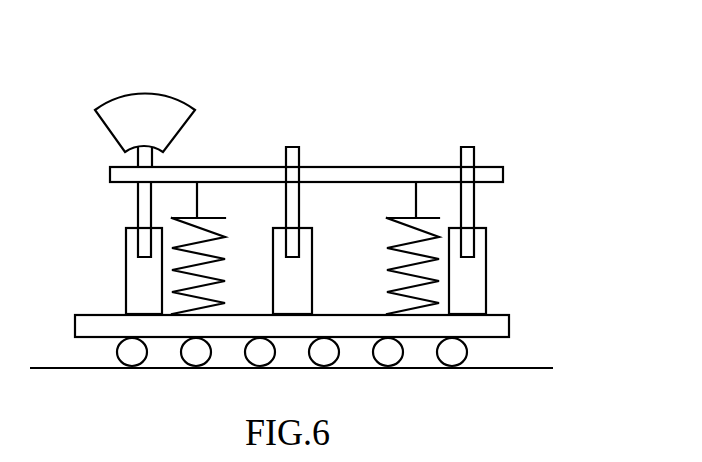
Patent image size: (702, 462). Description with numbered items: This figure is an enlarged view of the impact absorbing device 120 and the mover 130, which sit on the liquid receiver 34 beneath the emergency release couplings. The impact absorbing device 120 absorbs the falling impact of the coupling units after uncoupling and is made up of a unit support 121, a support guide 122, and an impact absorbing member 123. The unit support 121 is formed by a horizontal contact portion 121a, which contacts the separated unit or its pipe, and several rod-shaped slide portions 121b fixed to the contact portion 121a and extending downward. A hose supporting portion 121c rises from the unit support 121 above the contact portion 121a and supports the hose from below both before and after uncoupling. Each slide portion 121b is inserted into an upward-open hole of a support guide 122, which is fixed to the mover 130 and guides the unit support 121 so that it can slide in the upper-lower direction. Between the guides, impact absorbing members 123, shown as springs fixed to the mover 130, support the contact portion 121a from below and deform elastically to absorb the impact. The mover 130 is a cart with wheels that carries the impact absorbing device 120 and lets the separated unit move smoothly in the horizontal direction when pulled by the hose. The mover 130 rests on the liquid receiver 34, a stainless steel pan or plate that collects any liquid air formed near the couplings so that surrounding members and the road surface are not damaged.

The impact absorbing device 120 is at (356, 199).
The unit support 121 is at (361, 107).
The contact portion 121a is at (266, 177).
The rod-shaped slide portion 121b is at (143, 219).
The hose supporting portion 121c is at (144, 112).
The support guide 122 is at (127, 266).
The impact absorbing member 123 is at (188, 216).
The mover 130 is at (511, 321).
The liquid receiver 34 is at (530, 367).